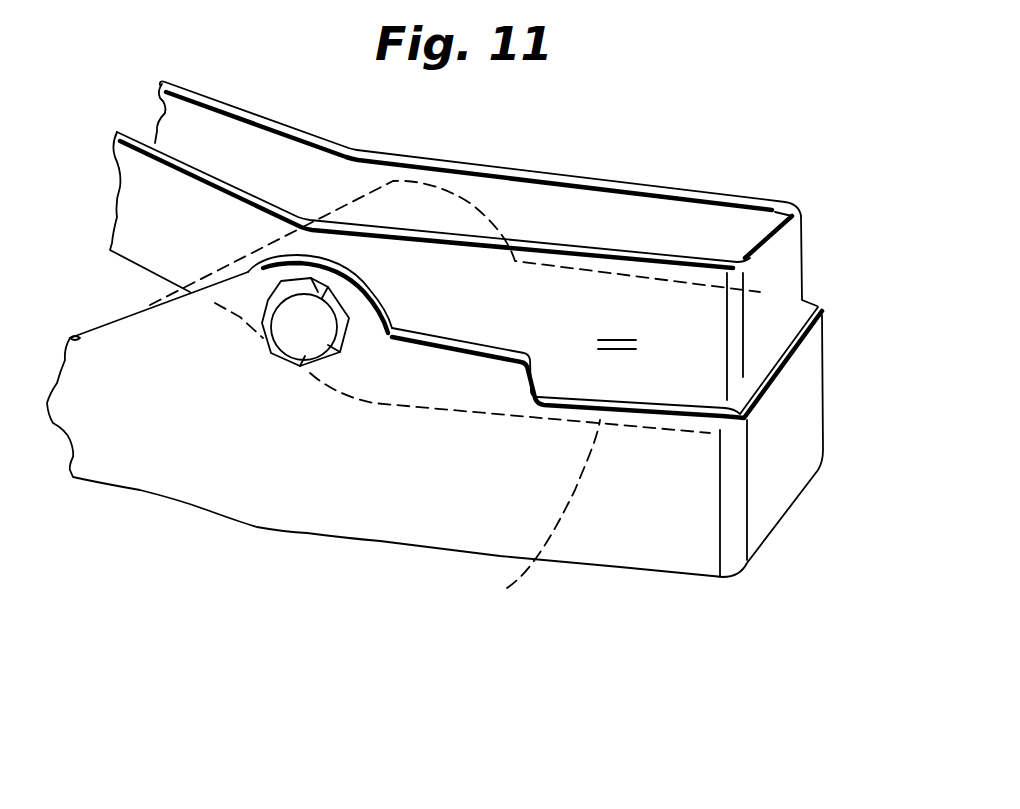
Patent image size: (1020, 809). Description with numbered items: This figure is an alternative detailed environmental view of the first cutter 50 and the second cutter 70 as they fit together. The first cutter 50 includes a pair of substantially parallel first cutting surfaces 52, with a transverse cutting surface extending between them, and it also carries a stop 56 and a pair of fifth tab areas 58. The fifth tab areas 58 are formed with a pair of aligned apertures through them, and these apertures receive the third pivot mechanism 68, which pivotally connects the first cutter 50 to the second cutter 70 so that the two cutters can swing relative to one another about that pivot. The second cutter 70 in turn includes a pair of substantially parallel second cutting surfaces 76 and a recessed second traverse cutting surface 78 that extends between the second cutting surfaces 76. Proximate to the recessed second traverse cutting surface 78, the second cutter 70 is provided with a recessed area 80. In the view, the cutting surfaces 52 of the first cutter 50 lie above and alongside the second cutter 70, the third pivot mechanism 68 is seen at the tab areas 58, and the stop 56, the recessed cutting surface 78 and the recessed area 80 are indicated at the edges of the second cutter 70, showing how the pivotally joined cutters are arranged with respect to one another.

The first cutter 50 is at (462, 532).
The first cutting surfaces 52 is at (673, 282).
The stop 56 is at (805, 352).
The fifth tab areas 58 is at (427, 182).
The third pivot mechanism 68 is at (290, 318).
The second cutter 70 is at (670, 336).
The second cutting surfaces 76 is at (531, 515).
The recessed second traverse cutting surface 78 is at (784, 338).
The recessed area 80 is at (721, 431).